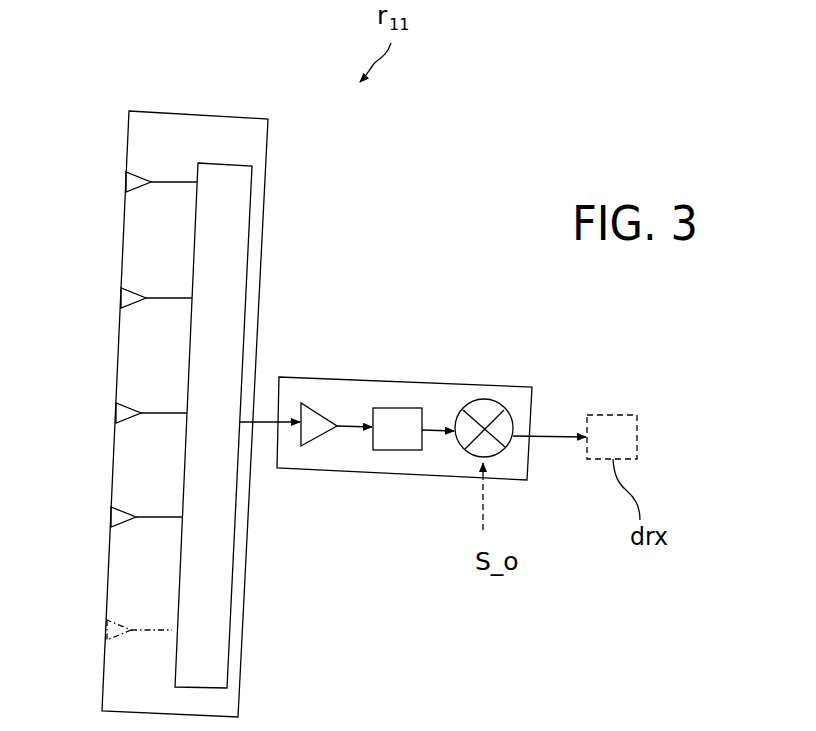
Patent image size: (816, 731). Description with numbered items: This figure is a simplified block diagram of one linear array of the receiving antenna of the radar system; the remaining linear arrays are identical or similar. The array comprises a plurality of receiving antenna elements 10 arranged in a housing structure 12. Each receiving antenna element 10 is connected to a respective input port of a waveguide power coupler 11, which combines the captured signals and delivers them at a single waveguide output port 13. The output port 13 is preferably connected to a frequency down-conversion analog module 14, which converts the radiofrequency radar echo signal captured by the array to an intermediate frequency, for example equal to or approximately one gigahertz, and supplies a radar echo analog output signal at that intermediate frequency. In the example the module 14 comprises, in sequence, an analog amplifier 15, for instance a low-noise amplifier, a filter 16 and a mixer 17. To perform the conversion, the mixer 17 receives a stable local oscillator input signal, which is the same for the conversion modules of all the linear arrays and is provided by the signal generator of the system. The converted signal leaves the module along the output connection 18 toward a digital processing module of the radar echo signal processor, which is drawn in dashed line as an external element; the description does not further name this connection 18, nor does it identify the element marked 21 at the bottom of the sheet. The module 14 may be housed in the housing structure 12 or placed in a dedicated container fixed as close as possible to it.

The receiving antenna element 10 is at (178, 182).
The waveguide power coupler 11 is at (226, 163).
The housing structure 12 is at (102, 668).
The waveguide output port 13 is at (260, 423).
The frequency down-conversion analog module 14 is at (311, 470).
The analog amplifier 15 is at (318, 402).
The filter 16 is at (400, 450).
The mixer 17 is at (482, 400).
The output line 18 is at (543, 437).
The reference numeral 21 is at (608, 730).